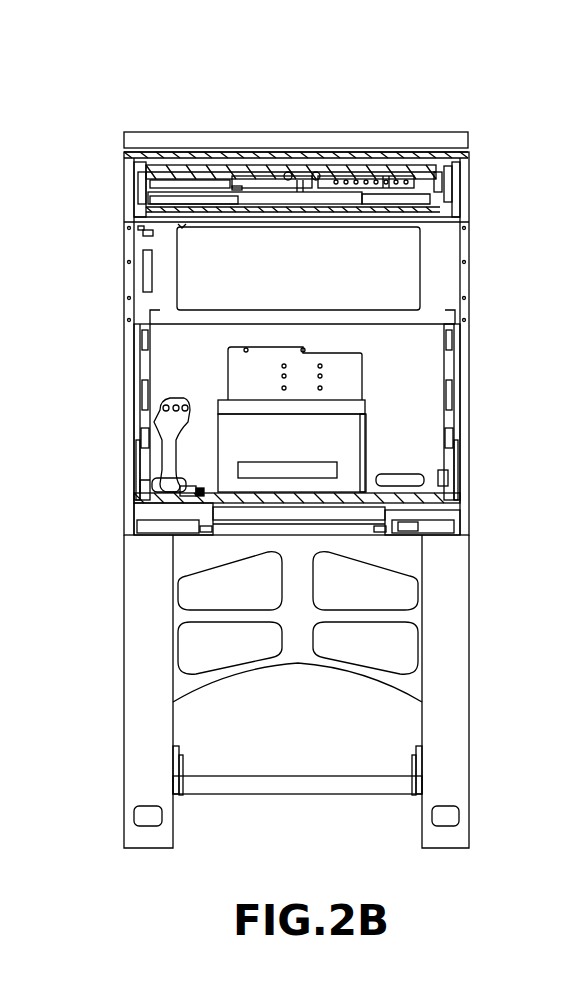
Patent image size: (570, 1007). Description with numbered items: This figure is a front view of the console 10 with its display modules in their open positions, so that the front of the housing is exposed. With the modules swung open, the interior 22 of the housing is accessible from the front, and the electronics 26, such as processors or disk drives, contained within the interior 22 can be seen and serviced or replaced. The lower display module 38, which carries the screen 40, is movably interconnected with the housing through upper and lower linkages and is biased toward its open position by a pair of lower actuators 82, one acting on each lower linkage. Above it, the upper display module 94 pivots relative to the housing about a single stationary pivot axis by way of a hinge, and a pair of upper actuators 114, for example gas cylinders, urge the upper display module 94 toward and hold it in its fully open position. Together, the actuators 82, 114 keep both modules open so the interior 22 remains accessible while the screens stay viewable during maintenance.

The console 10 is at (488, 122).
The interior 22 is at (172, 357).
The electronics 26 is at (380, 424).
The lower display module 38 is at (450, 255).
The screen 40 is at (322, 279).
The lower actuators 82 is at (133, 410).
The upper display module 94 is at (285, 132).
The upper actuators 114 is at (134, 202).